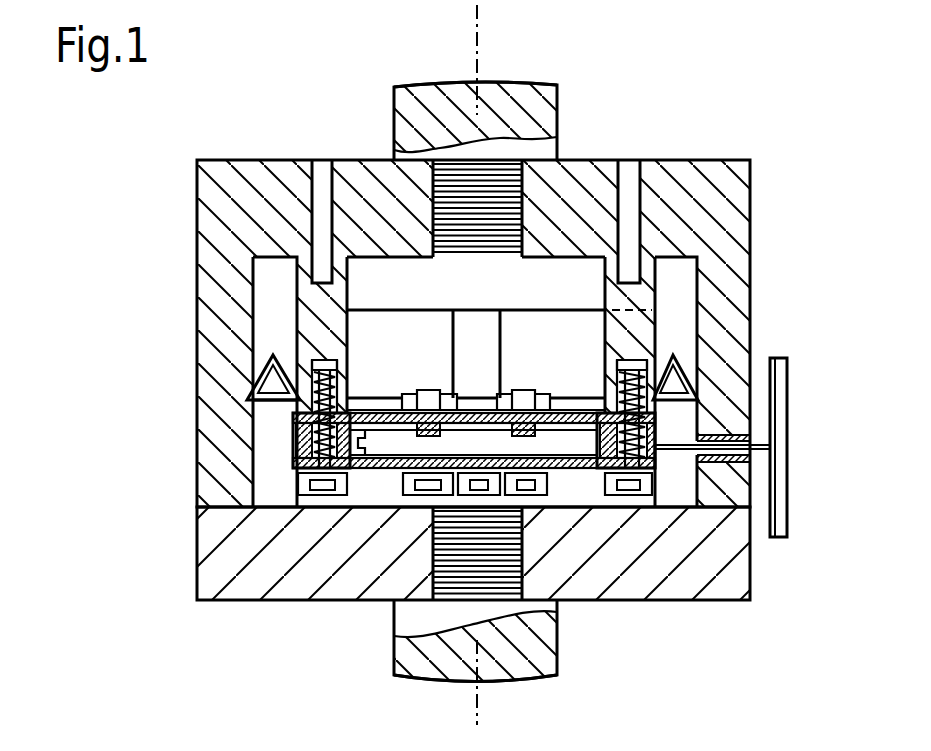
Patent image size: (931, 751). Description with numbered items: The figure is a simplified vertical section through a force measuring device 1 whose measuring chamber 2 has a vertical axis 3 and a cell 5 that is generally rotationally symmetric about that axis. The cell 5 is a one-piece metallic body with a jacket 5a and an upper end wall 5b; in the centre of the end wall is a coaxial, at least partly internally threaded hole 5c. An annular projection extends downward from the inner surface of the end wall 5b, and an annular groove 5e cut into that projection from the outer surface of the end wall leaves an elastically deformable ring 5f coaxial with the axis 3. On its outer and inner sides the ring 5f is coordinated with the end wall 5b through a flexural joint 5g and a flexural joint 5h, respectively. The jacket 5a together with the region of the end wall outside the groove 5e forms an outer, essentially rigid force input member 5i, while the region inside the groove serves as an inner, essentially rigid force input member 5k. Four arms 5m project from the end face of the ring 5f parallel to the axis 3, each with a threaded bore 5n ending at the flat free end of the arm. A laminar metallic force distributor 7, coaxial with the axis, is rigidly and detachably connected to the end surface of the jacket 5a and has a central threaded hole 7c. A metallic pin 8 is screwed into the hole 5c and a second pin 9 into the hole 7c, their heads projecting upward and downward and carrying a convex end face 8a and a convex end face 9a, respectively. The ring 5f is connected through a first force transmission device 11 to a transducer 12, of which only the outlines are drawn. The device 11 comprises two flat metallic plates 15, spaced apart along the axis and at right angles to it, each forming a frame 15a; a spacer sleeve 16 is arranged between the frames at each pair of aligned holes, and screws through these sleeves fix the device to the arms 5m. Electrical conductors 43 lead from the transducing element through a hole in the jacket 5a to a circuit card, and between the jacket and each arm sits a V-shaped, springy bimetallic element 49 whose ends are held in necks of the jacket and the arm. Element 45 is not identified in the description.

The force measuring device 1 is at (192, 174).
The measuring chamber 2 is at (207, 152).
The vertical axis 3 is at (475, 38).
The cell 5 is at (197, 207).
The jacket 5a is at (203, 280).
The end wall 5b is at (258, 165).
The hole 5c is at (436, 242).
The annular groove 5e is at (323, 167).
The elastically deformable ring 5f is at (642, 290).
The flexural joint 5g is at (637, 300).
The flexural joint 5h is at (607, 272).
The outer force input member 5i is at (708, 172).
The inner force input member 5k is at (572, 180).
The arm 5m is at (453, 350).
The threaded bore 5n is at (335, 376).
The force distributor 7 is at (197, 570).
The hole 7c is at (523, 562).
The pin 8 is at (402, 100).
The convex end face 8a is at (520, 83).
The pin 9 is at (402, 643).
The convex end face 9a is at (453, 679).
The first force transmission device 11 is at (282, 452).
The transducer 12 is at (362, 475).
The plate 15 is at (588, 397).
The frame 15a is at (295, 420).
The spacer sleeve 16 is at (292, 441).
The electrical conductors 43 is at (757, 452).
The disc 45 is at (787, 373).
The bimetallic element 49 is at (268, 360).